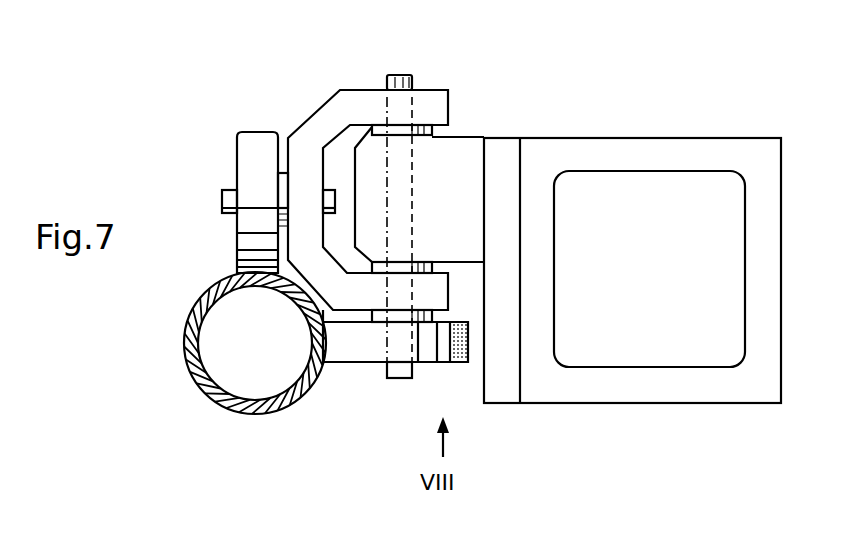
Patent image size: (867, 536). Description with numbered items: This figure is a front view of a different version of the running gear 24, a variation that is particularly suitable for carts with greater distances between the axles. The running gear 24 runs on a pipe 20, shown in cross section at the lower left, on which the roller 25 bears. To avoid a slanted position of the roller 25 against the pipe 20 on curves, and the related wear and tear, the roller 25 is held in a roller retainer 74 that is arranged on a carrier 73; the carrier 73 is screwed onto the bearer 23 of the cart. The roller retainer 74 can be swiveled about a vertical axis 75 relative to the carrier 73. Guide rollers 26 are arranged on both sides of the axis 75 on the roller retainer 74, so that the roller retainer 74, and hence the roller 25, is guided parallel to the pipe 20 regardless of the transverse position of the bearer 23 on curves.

The pipe 20 is at (197, 385).
The bearer 23 is at (598, 148).
The running gear 24 is at (470, 36).
The roller 25 is at (253, 163).
The guide roller 26 is at (372, 345).
The carrier 73 is at (458, 170).
The roller retainer 74 is at (333, 117).
The vertical axis 75 is at (388, 73).